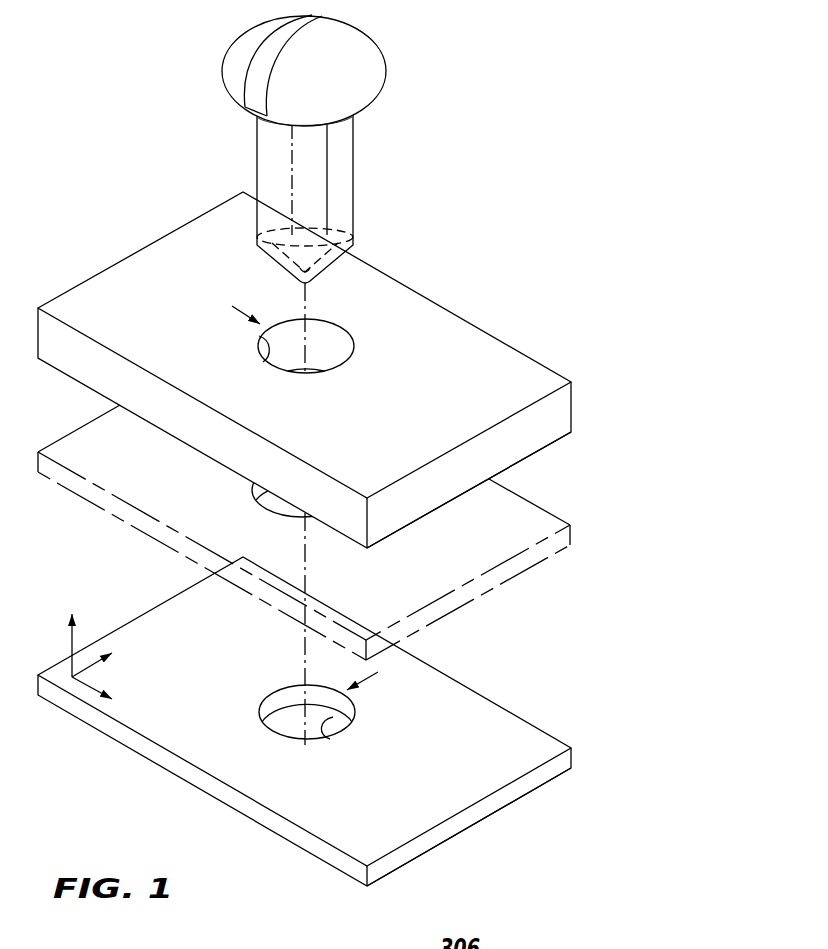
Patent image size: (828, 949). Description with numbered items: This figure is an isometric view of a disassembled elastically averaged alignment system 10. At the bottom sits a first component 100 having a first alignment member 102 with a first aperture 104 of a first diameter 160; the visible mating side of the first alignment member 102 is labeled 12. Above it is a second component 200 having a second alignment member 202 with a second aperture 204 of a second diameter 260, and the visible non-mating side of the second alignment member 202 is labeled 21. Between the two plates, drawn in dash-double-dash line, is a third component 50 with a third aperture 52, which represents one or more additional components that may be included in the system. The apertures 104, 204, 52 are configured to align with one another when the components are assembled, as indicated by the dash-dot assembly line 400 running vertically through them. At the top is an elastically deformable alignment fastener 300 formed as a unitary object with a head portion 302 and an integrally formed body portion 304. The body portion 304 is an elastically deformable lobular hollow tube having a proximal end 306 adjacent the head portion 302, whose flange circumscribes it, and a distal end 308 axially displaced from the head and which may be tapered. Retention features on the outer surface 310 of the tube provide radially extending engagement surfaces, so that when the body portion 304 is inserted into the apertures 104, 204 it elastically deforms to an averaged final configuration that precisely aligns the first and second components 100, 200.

The elastically averaged alignment system 10 is at (506, 115).
The elastically deformable alignment fastener 300 is at (255, 149).
The head portion 302 is at (358, 55).
The body portion 304 is at (355, 160).
The proximal end 306 is at (359, 125).
The distal end 308 is at (293, 283).
The outer surface 310 is at (313, 182).
The second component 200 is at (575, 405).
The non-mating side 21 is at (378, 454).
The second alignment member 202 is at (532, 455).
The second aperture 204 is at (258, 345).
The second diameter 260 is at (421, 392).
The third component 50 is at (575, 527).
The third aperture 52 is at (246, 477).
The assembly line 400 is at (306, 572).
The first component 100 is at (575, 752).
The mating side 12 is at (379, 833).
The first alignment member 102 is at (505, 808).
The first aperture 104 is at (345, 712).
The first diameter 160 is at (262, 736).